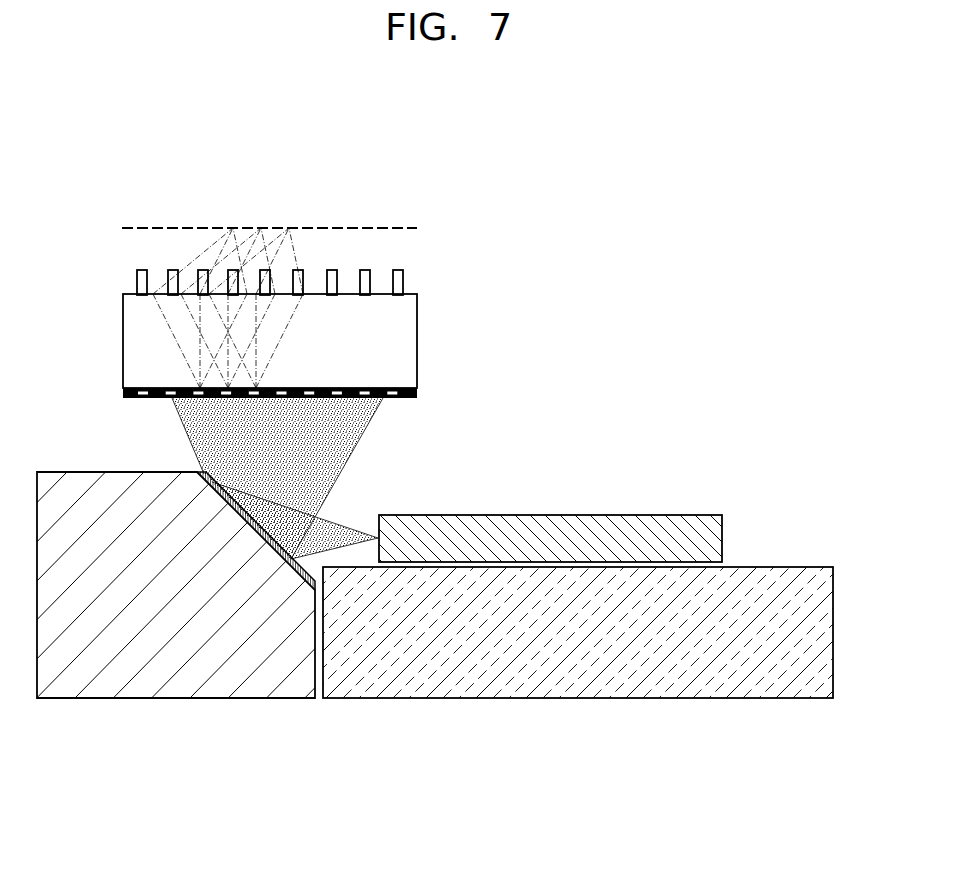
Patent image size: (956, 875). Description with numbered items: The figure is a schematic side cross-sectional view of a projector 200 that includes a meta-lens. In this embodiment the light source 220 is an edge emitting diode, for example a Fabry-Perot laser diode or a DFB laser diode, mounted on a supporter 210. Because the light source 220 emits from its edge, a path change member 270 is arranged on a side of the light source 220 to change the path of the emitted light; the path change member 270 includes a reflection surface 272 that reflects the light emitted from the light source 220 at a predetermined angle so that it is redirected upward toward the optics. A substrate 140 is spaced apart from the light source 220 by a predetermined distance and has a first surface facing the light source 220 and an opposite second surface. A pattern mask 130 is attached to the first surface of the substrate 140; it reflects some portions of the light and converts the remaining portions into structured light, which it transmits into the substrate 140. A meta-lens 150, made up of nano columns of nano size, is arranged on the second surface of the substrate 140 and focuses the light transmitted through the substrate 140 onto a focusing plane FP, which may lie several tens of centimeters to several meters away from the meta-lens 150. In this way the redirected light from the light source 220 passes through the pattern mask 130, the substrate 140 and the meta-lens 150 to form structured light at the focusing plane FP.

The projector 200 is at (546, 217).
The focusing plane FP is at (140, 228).
The meta-lens 150 is at (414, 283).
The substrate 140 is at (403, 344).
The pattern mask 130 is at (420, 394).
The path change member 270 is at (137, 698).
The reflection surface 272 is at (258, 535).
The light source 220 is at (668, 525).
The supporter 210 is at (605, 698).